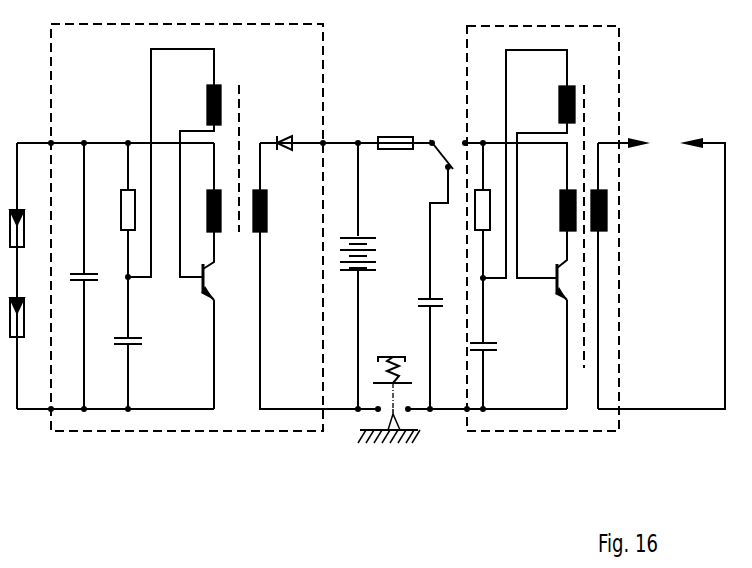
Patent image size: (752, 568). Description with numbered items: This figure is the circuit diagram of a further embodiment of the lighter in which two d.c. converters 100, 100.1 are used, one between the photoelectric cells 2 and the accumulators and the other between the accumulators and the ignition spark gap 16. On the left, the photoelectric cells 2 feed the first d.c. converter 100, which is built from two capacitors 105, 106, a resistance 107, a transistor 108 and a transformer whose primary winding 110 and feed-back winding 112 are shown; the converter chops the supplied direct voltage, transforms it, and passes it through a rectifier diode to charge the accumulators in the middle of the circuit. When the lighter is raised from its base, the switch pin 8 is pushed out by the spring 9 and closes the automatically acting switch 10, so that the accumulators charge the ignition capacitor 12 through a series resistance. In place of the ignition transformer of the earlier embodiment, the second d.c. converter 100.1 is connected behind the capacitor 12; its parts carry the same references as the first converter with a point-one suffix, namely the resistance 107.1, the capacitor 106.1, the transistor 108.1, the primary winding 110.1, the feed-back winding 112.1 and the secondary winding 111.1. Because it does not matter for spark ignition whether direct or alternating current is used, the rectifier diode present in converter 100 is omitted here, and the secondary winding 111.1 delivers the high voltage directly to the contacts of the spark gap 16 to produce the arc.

The photoelectric cells 2 is at (16, 232).
The switch pin 8 is at (410, 443).
The spring 9 is at (393, 357).
The automatically acting switch 10 is at (391, 384).
The capacitor 12 is at (432, 310).
The spark gap 16 is at (662, 148).
The d.c. converter 100 is at (152, 431).
The d.c. converter 100.1 is at (578, 432).
The capacitor 105 is at (84, 282).
The capacitor 106 is at (128, 345).
The capacitor 106.1 is at (485, 353).
The resistance 107 is at (127, 205).
The resistance 107.1 is at (486, 205).
The transistor 108 is at (203, 288).
The transistor 108.1 is at (557, 280).
The primary winding 110 is at (213, 227).
The primary winding 110.1 is at (562, 213).
The secondary winding 111.1 is at (607, 218).
The feed-back winding 112 is at (207, 94).
The feed-back winding 112.1 is at (558, 108).